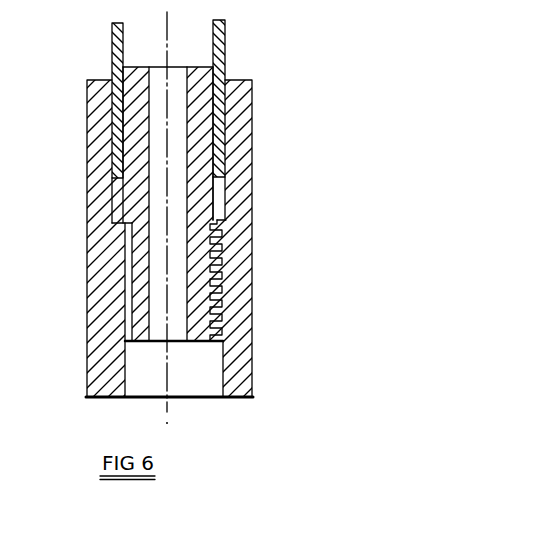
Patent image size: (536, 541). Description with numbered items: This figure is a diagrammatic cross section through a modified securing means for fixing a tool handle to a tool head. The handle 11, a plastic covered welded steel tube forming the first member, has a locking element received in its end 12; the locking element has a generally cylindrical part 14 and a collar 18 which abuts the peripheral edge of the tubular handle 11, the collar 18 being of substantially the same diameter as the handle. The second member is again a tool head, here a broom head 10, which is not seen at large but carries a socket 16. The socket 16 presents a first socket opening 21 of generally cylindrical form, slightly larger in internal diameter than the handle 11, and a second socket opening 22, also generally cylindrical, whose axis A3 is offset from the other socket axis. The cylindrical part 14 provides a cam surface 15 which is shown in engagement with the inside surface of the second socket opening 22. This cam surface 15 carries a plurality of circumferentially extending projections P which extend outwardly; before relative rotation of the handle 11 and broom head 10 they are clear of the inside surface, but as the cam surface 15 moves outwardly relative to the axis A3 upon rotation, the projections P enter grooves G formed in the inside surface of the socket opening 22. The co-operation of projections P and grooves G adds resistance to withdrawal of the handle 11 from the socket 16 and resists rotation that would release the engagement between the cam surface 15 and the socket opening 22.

The broom head 10 is at (88, 403).
The handle 11 is at (231, 60).
The end of the tubular handle 12 is at (218, 153).
The generally cylindrical part 14 is at (143, 328).
The cam surface 15 is at (212, 305).
The socket 16 is at (86, 297).
The collar 18 is at (120, 212).
The first socket opening 21 is at (220, 215).
The second socket opening 22 is at (208, 280).
The projections P is at (212, 258).
The grooves G is at (203, 343).
The axis of the second socket opening A3 is at (166, 77).